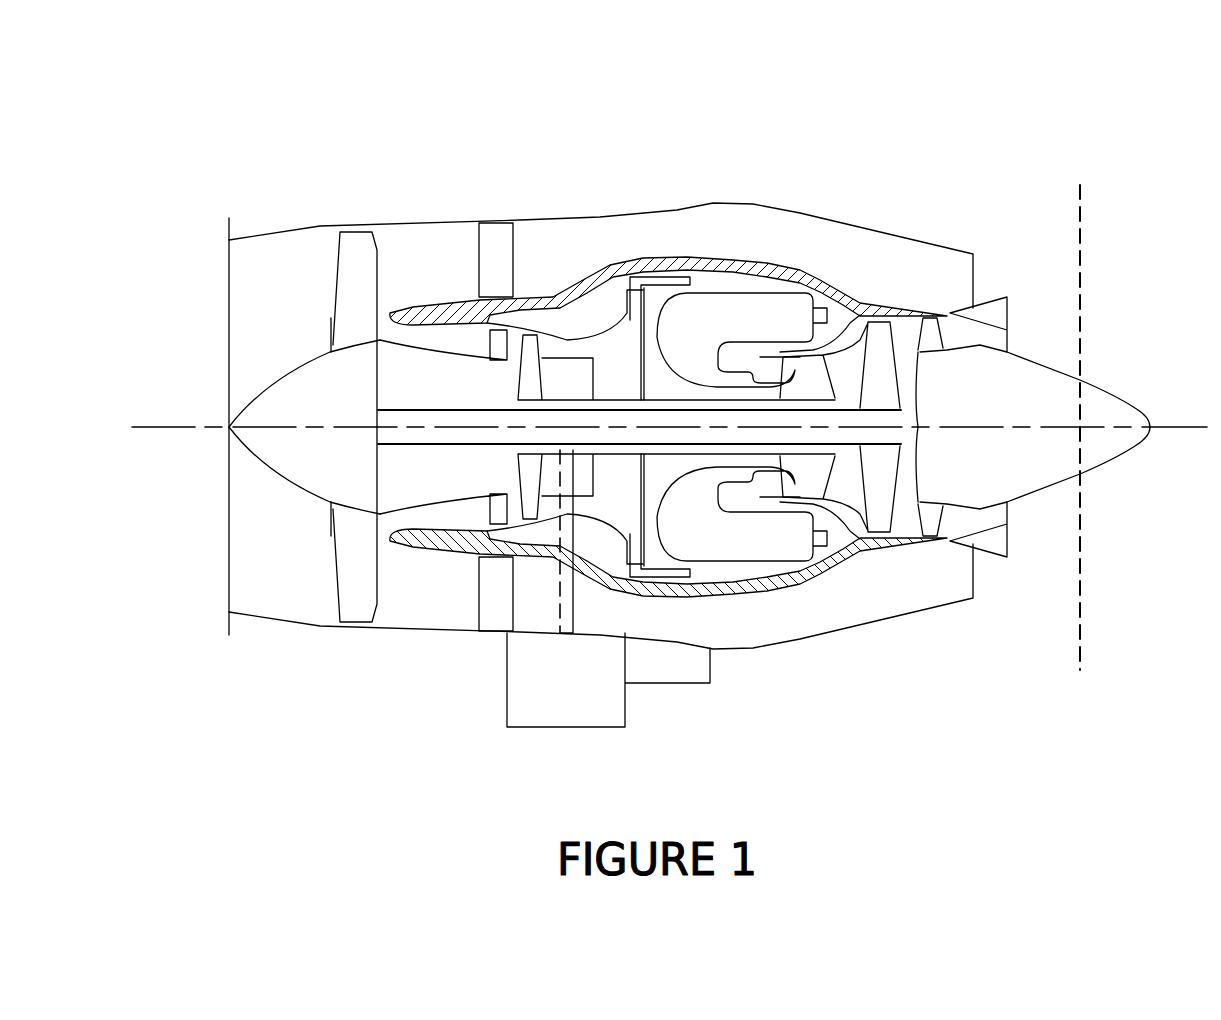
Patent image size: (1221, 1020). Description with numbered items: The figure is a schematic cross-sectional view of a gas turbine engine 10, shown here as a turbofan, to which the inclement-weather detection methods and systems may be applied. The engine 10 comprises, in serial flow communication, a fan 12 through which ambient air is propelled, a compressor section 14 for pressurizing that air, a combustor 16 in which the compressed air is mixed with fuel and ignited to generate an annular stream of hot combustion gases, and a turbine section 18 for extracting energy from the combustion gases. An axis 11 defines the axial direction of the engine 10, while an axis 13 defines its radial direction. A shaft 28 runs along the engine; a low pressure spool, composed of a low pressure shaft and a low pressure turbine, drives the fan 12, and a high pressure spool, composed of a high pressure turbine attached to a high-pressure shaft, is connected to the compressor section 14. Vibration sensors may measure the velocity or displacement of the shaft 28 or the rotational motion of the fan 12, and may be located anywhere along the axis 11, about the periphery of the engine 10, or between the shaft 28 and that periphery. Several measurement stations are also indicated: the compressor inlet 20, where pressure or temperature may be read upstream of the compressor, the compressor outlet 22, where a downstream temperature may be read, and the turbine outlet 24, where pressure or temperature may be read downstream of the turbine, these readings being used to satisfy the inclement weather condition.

The gas turbine engine 10 is at (862, 163).
The axis 11 is at (1180, 425).
The fan 12 is at (350, 553).
The axis 13 is at (1080, 273).
The compressor section 14 is at (560, 343).
The combustor 16 is at (737, 308).
The turbine section 18 is at (843, 480).
The compressor inlet 20 is at (438, 513).
The compressor outlet 22 is at (660, 552).
The turbine outlet 24 is at (907, 498).
The shaft 28 is at (402, 410).